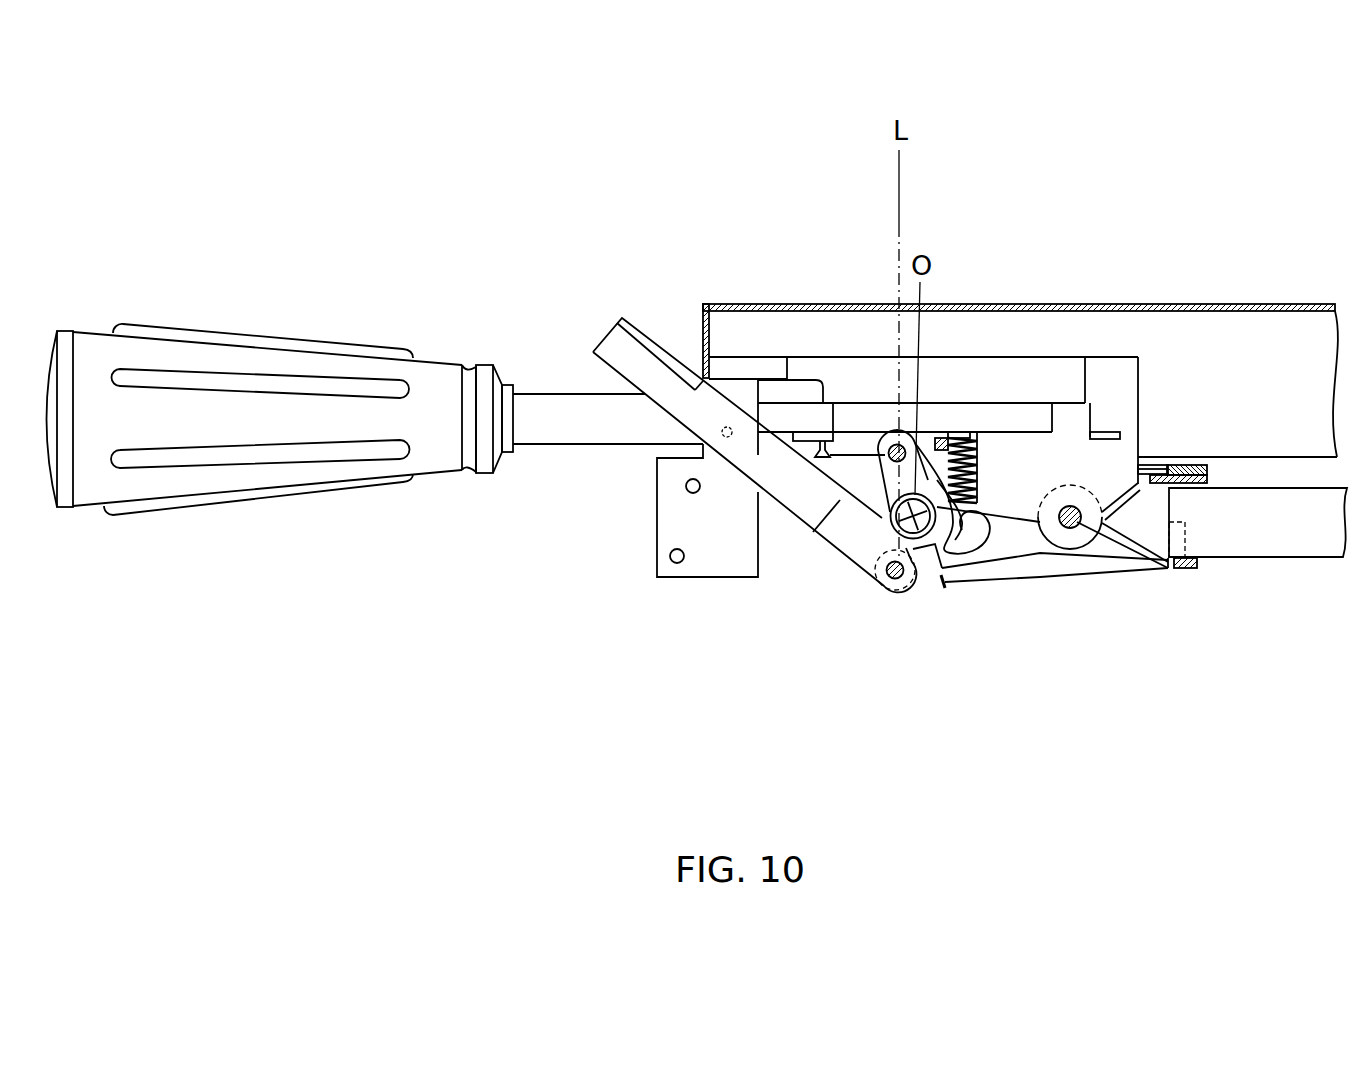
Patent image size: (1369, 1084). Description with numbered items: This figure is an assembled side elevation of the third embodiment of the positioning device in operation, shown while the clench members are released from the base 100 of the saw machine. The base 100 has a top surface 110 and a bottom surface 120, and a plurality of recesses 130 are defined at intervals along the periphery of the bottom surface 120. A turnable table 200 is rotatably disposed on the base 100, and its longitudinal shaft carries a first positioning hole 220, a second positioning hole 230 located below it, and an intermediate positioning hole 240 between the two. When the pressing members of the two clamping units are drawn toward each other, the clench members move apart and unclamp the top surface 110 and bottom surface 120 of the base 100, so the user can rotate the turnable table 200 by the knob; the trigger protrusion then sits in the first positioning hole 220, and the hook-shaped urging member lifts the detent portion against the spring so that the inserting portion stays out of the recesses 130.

The intermediate positioning hole 240 is at (686, 486).
The second positioning hole 230 is at (670, 556).
The first positioning hole 220 is at (727, 425).
The turnable table 200 is at (1116, 303).
The top surface 110 is at (1190, 488).
The base 100 is at (1308, 552).
The bottom surface 120 is at (1193, 552).
The recesses 130 is at (1185, 562).